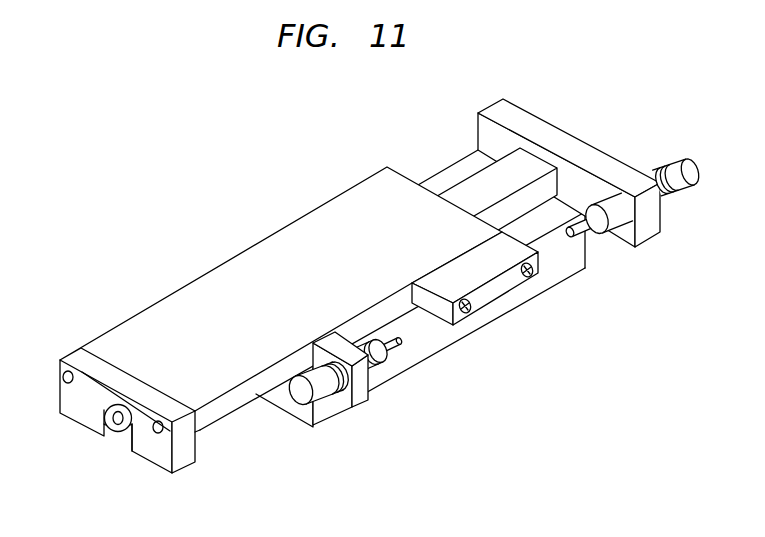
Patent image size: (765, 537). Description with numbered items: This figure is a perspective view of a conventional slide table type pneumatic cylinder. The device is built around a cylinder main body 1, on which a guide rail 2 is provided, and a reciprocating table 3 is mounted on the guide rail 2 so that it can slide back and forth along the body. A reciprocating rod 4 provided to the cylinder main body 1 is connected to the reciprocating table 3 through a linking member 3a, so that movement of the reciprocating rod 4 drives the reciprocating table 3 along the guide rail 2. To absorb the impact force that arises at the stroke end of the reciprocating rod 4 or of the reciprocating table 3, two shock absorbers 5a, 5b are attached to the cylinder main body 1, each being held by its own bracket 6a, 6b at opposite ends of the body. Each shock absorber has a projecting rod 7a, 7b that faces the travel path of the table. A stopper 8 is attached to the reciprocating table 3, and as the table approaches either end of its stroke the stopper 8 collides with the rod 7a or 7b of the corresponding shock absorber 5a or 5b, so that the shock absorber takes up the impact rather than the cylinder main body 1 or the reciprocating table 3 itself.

The cylinder main body 1 is at (560, 265).
The guide rail 2 is at (517, 162).
The reciprocating table 3 is at (287, 255).
The linking member 3a is at (82, 358).
The reciprocating rod 4 is at (116, 430).
The shock absorber 5a is at (320, 392).
The shock absorber 5b is at (686, 163).
The bracket 6a is at (362, 383).
The bracket 6b is at (568, 142).
The rod of shock absorber 7a is at (400, 344).
The rod of shock absorber 7b is at (590, 236).
The stopper 8 is at (497, 289).